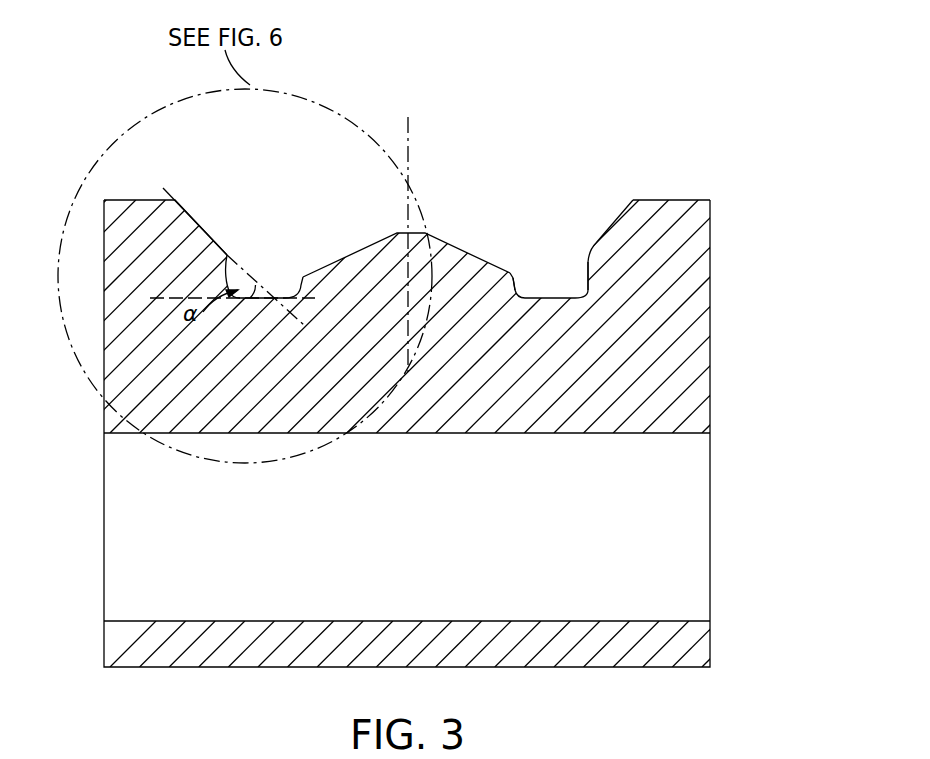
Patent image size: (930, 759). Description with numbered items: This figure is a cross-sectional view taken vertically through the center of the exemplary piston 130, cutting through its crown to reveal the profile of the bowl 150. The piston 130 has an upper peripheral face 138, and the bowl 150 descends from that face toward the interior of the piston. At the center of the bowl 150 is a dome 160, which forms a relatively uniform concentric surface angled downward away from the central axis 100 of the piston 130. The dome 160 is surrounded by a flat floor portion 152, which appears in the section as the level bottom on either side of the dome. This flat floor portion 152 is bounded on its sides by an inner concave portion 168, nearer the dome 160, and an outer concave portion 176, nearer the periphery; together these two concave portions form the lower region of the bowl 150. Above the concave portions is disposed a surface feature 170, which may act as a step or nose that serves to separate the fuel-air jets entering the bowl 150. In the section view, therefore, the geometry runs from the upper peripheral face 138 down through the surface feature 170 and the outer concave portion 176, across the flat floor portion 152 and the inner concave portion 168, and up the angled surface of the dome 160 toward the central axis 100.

The central axis 100 is at (411, 133).
The piston 130 is at (730, 351).
The upper peripheral face 138 is at (673, 200).
The bowl 150 is at (528, 220).
The flat floor portion 152 is at (281, 297).
The dome 160 is at (376, 226).
The inner concave portion 168 is at (505, 295).
The surface feature 170 is at (663, 200).
The outer concave portion 176 is at (602, 286).